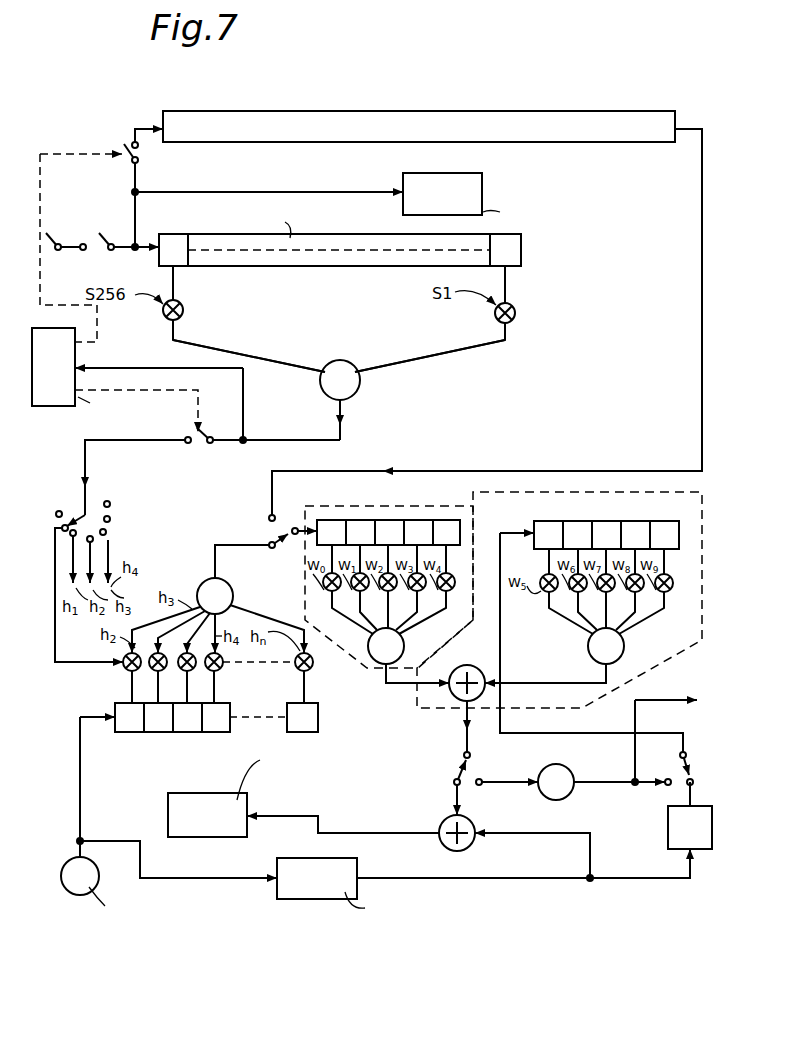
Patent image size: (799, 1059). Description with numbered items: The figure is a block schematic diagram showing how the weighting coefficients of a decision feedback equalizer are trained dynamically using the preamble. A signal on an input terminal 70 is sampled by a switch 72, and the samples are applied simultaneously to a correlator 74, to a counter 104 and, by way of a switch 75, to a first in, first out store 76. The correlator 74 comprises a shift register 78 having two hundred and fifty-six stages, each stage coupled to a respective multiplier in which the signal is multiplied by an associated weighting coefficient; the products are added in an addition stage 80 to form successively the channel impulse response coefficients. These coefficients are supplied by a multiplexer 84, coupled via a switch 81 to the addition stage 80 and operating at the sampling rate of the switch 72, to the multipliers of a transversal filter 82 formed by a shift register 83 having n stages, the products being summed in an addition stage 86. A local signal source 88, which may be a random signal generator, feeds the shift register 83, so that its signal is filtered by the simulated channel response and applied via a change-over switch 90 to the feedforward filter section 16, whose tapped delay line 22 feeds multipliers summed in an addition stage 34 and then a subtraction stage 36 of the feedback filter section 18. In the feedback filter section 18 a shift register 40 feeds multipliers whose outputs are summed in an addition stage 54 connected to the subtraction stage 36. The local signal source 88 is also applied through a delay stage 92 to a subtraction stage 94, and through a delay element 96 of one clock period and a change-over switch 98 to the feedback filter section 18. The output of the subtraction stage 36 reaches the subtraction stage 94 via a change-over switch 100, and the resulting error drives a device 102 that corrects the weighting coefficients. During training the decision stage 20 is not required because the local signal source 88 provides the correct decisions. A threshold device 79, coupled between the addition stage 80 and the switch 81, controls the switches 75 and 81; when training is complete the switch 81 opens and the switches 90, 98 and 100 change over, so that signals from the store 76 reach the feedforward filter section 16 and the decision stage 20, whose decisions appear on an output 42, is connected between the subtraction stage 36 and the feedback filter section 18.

The first in, first out (FIFO) store 76 is at (371, 122).
The switch 75 is at (125, 163).
The input terminal 70 is at (65, 230).
The switch 72 is at (112, 232).
The shift register 78 is at (371, 238).
The counter 104 is at (482, 200).
The correlator 74 is at (441, 356).
The addition stage 80 is at (356, 396).
The threshold device 79 is at (76, 351).
The switch 81 is at (199, 454).
The multiplexer 84 is at (120, 517).
The addition stage 86 is at (233, 590).
The transversal filter 82 is at (118, 679).
The shift register 83 is at (130, 733).
The local signal source 88 is at (68, 862).
The delay stage 92 is at (360, 873).
The device for correcting the weighting coefficients 102 is at (213, 793).
The subtraction stage 94 is at (466, 847).
The change-over switch 100 is at (461, 755).
The decision stage 20 is at (543, 770).
The change-over switch 98 is at (682, 768).
The delay element 96 is at (668, 818).
The output 42 is at (678, 698).
The switch 90 is at (291, 527).
The tapped delay line 22 is at (463, 527).
The addition stage 34 is at (401, 656).
The subtraction stage 36 is at (489, 652).
The shift register 40 is at (620, 521).
The addition stage 54 is at (588, 648).
The feedforward filter section 16 is at (350, 648).
The feedback filter section 18 is at (563, 600).